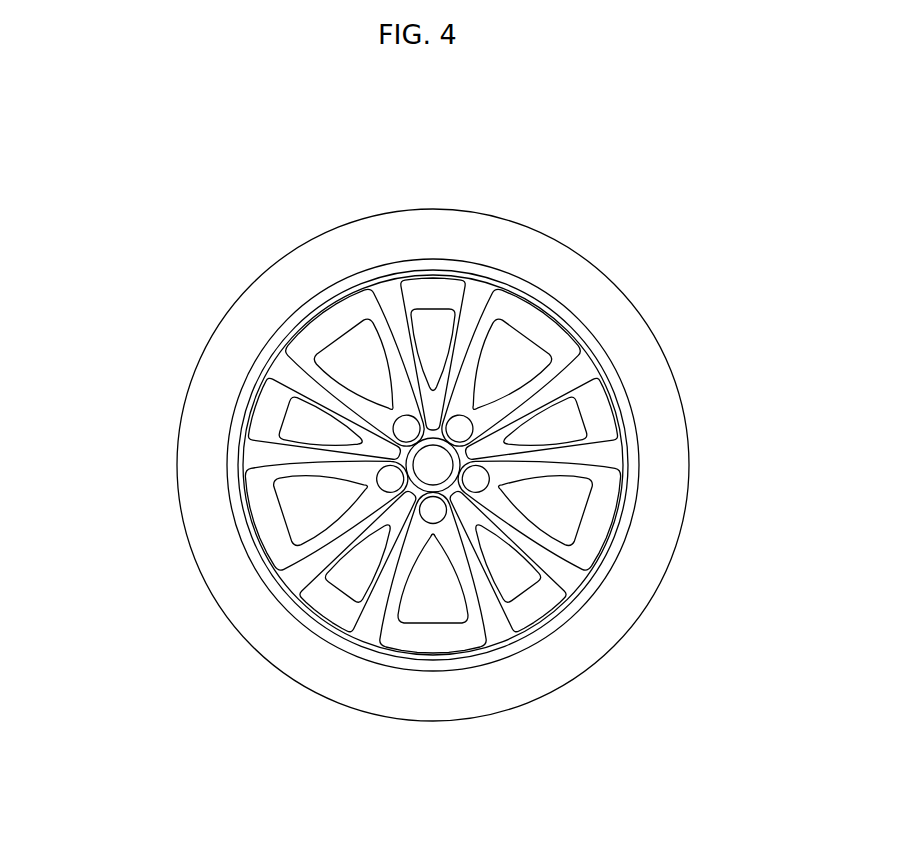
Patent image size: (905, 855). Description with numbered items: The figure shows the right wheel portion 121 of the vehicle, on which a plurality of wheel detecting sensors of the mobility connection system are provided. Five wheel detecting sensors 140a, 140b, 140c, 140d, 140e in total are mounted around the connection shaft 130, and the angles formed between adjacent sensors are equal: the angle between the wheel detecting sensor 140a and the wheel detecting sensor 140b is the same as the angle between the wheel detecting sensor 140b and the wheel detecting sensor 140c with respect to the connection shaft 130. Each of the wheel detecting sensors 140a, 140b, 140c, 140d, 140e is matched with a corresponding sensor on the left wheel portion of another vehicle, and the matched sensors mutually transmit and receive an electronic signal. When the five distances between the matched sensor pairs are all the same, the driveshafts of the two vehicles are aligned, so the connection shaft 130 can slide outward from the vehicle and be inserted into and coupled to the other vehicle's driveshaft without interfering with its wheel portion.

The right wheel portion 121 is at (533, 215).
The connection shaft 130 is at (434, 462).
The wheel detecting sensor 140a is at (405, 430).
The wheel detecting sensor 140b is at (390, 482).
The wheel detecting sensor 140c is at (433, 514).
The wheel detecting sensor 140d is at (478, 482).
The wheel detecting sensor 140e is at (461, 430).